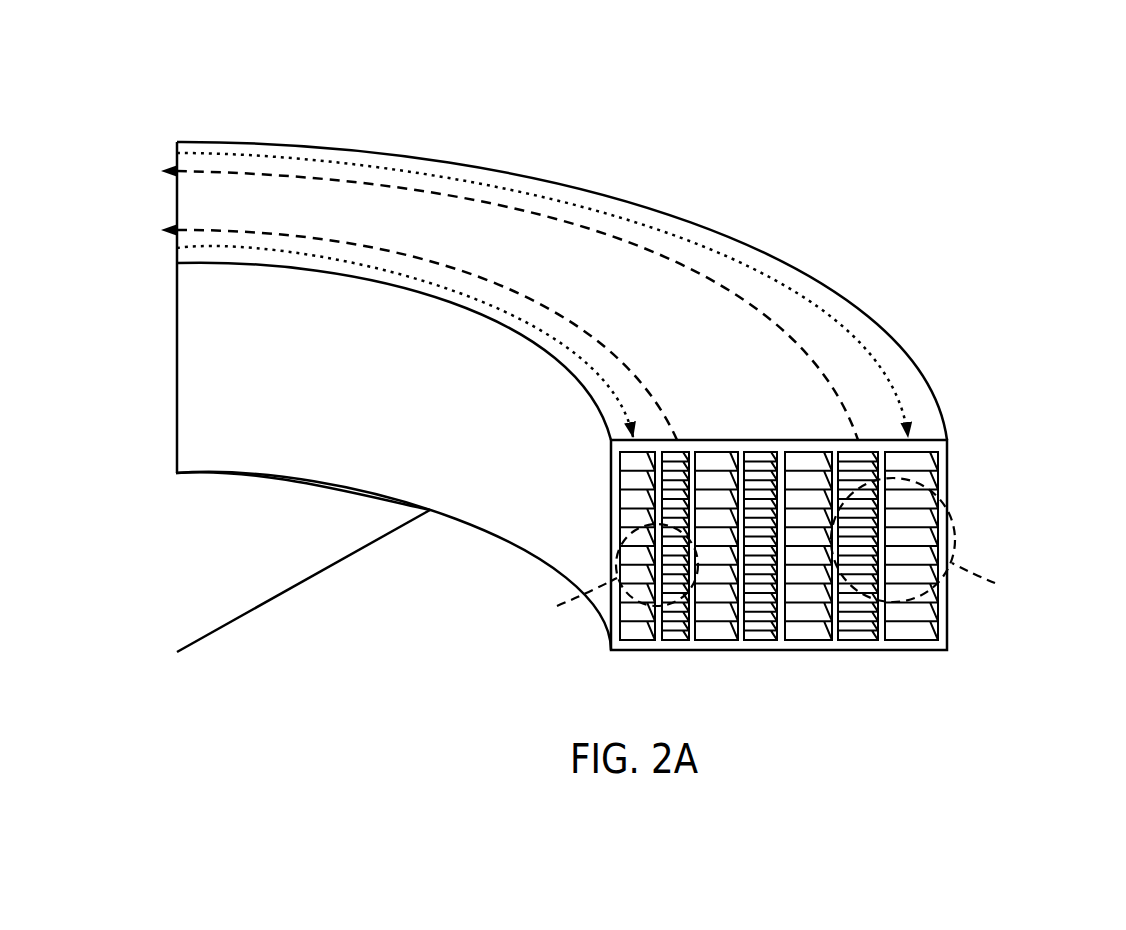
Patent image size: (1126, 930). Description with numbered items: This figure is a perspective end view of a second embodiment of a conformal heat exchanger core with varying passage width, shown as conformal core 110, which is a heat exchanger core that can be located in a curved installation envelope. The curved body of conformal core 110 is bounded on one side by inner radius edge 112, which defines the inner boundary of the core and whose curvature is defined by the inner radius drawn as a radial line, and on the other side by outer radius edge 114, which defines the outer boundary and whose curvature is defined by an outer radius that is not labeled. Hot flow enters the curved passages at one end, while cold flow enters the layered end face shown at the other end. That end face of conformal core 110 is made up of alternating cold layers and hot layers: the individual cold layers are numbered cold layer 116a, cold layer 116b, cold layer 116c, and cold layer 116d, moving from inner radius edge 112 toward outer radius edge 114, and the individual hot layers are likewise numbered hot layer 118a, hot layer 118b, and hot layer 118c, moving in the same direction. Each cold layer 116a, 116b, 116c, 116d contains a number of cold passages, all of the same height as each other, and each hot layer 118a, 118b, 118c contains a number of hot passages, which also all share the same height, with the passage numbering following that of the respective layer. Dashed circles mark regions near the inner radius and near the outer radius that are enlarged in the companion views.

The conformal core 110 is at (188, 86).
The inner radius edge 112 is at (306, 484).
The outer radius edge 114 is at (674, 210).
The cold layer 116a is at (633, 637).
The cold layer 116b is at (720, 637).
The cold layer 116c is at (812, 637).
The cold layer 116d is at (908, 637).
The hot layer 118a is at (677, 637).
The hot layer 118b is at (766, 637).
The hot layer 118c is at (859, 637).